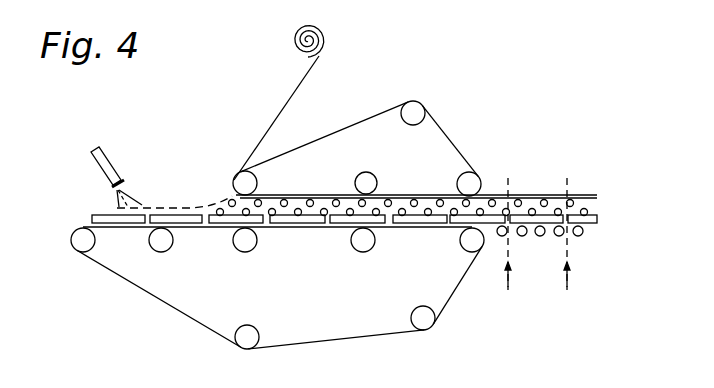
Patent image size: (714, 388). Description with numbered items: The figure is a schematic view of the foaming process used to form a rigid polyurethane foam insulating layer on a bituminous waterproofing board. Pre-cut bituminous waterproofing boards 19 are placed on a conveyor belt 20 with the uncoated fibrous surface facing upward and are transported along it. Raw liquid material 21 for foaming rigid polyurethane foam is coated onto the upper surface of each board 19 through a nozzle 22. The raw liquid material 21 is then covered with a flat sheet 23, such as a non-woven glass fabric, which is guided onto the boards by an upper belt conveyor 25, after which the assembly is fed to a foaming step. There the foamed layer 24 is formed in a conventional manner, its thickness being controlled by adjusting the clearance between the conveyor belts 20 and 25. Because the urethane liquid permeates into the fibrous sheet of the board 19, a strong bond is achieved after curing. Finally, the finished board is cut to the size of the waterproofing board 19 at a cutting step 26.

The bituminous waterproofing board 19 is at (102, 215).
The conveyor belt 20 is at (190, 316).
The raw liquid material 21 is at (126, 196).
The nozzle 22 is at (105, 156).
The flat sheet 23 is at (279, 112).
The foamed layer 24 is at (410, 207).
The belt conveyor 25 is at (305, 195).
The cutting step 26 is at (540, 260).